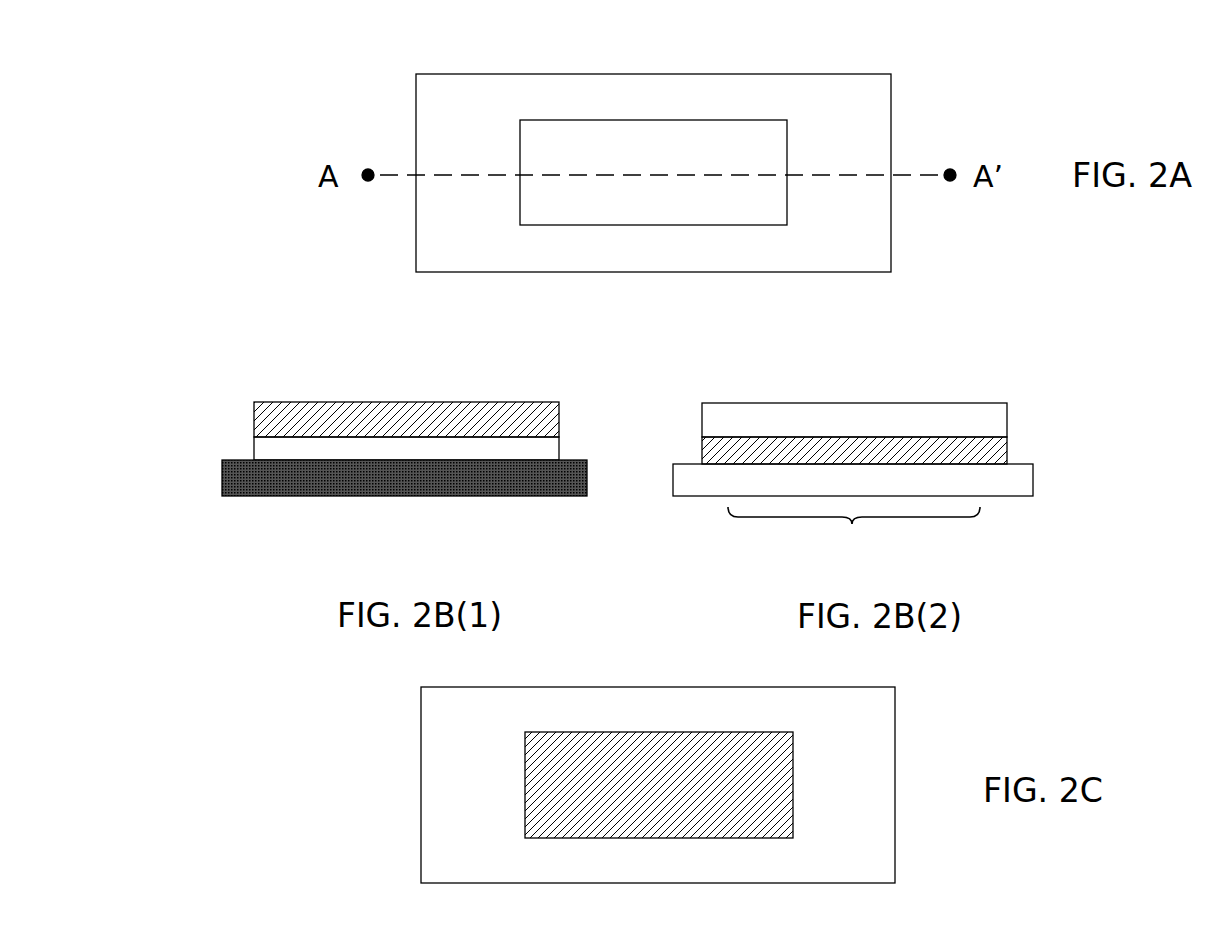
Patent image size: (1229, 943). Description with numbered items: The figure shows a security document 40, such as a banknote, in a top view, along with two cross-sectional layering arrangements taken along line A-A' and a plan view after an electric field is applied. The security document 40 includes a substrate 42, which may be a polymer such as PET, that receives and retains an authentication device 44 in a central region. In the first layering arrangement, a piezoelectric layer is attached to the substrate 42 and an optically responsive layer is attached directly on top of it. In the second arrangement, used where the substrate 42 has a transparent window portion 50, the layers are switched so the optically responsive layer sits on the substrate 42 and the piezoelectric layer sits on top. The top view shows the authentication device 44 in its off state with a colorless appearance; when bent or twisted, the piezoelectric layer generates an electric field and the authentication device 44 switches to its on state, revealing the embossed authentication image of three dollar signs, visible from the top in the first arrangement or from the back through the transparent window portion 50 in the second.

In FIG. 2A, the security document 40 is at (559, 218).
In FIG. 2C, the security document 40 is at (622, 725).
In FIG. 2A, the substrate 42 is at (834, 252).
In FIG. 2C, the substrate 42 is at (885, 842).
In FIG. 2A, the authentication device 44 is at (580, 210).
In FIG. 2C, the authentication device 44 is at (612, 733).
The transparent window portion 50 is at (854, 535).